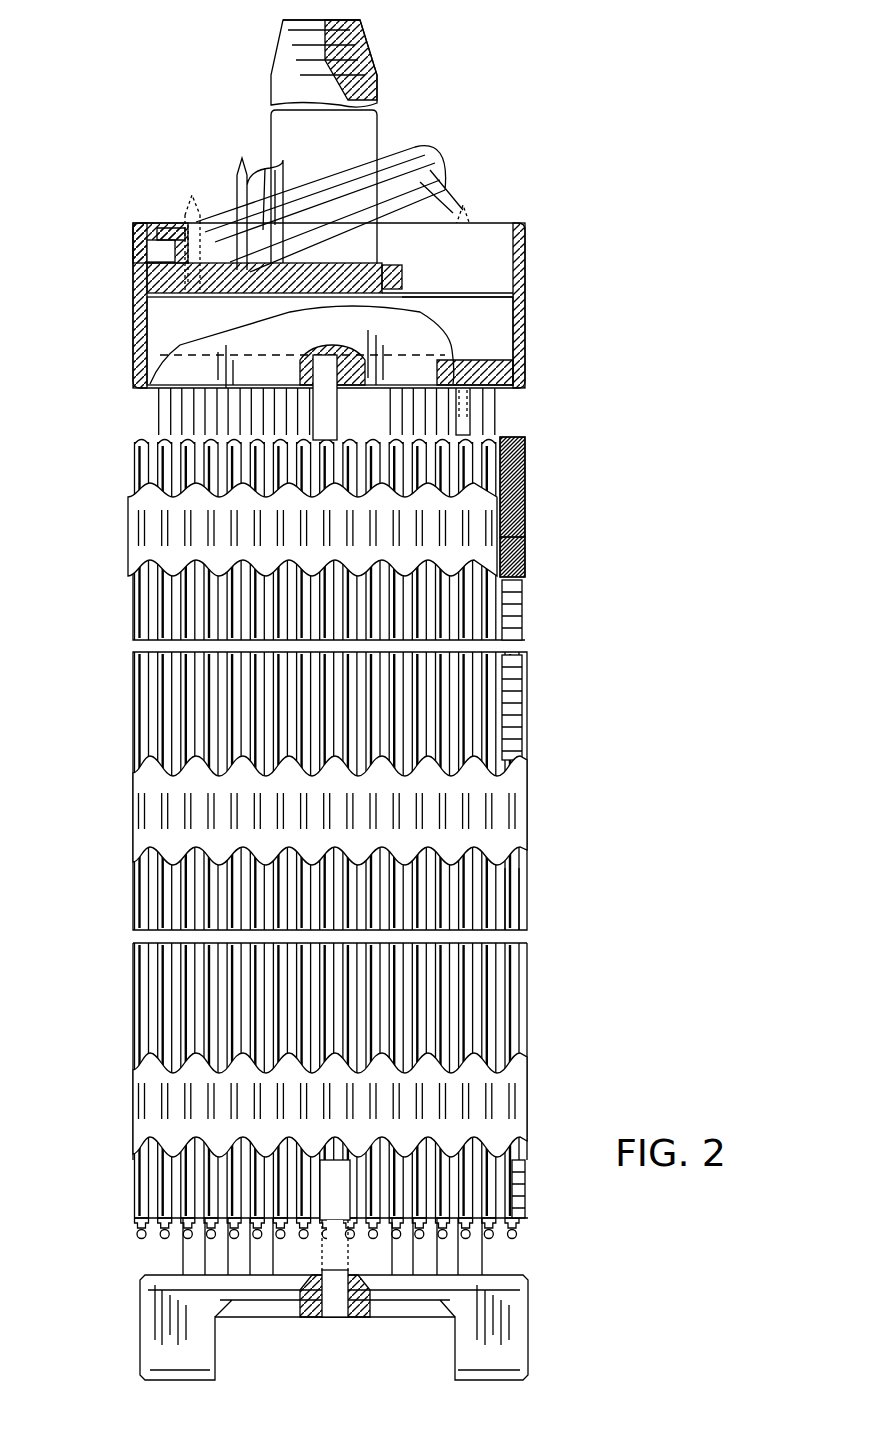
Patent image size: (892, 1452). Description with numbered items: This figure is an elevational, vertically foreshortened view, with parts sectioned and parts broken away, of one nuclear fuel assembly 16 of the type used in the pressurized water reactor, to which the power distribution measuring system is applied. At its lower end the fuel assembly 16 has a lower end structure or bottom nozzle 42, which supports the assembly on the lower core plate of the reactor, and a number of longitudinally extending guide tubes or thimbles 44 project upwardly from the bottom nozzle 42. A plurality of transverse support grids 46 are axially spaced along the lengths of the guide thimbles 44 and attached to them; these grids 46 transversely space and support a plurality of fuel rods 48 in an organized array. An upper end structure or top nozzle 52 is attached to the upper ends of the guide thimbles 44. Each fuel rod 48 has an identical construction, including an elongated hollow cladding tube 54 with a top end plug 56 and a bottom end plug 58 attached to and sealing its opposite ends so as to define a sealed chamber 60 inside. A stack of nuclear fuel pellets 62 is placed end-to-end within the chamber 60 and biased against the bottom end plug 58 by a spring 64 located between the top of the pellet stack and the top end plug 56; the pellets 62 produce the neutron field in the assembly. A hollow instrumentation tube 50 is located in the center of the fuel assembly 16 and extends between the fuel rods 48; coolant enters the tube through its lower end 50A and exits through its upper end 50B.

The fuel assembly 16 is at (546, 210).
The bottom nozzle 42 is at (530, 1322).
The guide thimbles 44 is at (478, 410).
The transverse support grids 46 is at (128, 517).
The fuel rods 48 is at (526, 607).
The instrumentation tube 50 is at (332, 1300).
The lower end of instrumentation tube 50A is at (342, 1297).
The upper end of instrumentation tube 50B is at (325, 355).
The top nozzle 52 is at (525, 318).
The cladding tube 54 is at (522, 886).
The top end plug 56 is at (523, 440).
The bottom end plug 58 is at (522, 1227).
The sealed chamber 60 is at (522, 522).
The nuclear fuel pellets 62 is at (520, 712).
The spring 64 is at (522, 560).